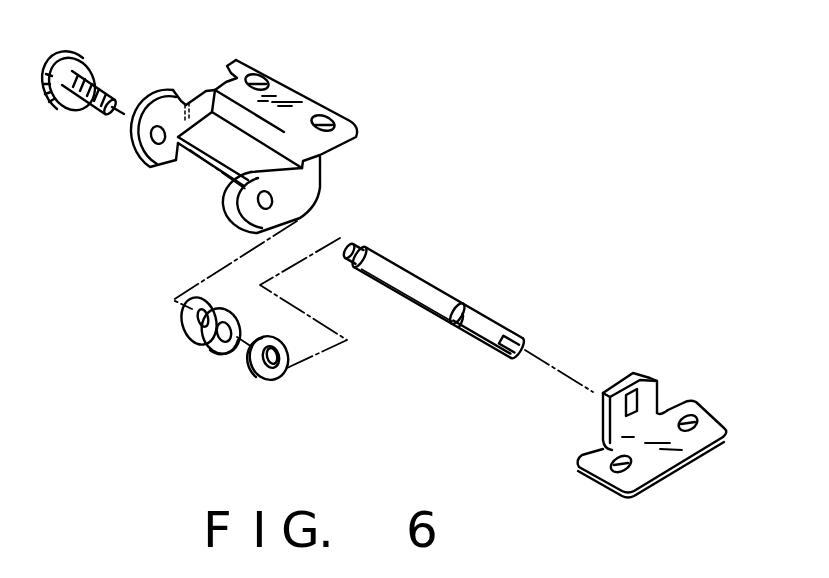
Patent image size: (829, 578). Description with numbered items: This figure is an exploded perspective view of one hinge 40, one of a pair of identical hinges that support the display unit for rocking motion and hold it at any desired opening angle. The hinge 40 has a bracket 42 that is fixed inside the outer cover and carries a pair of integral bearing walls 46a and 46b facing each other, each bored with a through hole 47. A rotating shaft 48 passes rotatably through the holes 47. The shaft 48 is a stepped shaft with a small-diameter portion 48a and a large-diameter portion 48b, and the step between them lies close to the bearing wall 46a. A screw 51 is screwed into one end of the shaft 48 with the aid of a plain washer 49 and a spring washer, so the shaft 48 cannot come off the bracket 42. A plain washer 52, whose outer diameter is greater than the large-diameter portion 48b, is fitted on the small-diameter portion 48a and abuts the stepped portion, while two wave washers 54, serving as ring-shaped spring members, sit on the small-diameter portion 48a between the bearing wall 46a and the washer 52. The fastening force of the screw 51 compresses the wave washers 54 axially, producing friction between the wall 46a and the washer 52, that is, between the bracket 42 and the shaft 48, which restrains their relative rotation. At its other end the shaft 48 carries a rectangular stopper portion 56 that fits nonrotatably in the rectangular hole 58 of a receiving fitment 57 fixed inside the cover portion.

The hinge 40 is at (280, 137).
The bracket 42 is at (286, 102).
The bearing wall 46a is at (177, 100).
The bearing wall 46b is at (307, 179).
The through hole 47 is at (160, 143).
The rotating shaft 48 is at (433, 329).
The small-diameter portion 48a is at (350, 268).
The large-diameter portion 48b is at (452, 296).
The plain washer 49 is at (82, 91).
The screw 51 is at (92, 83).
The plain washer 52 is at (258, 381).
The wave washers 54 is at (207, 352).
The stopper portion 56 is at (502, 355).
The receiving fitment 57 is at (652, 429).
The rectangular hole 58 is at (617, 434).